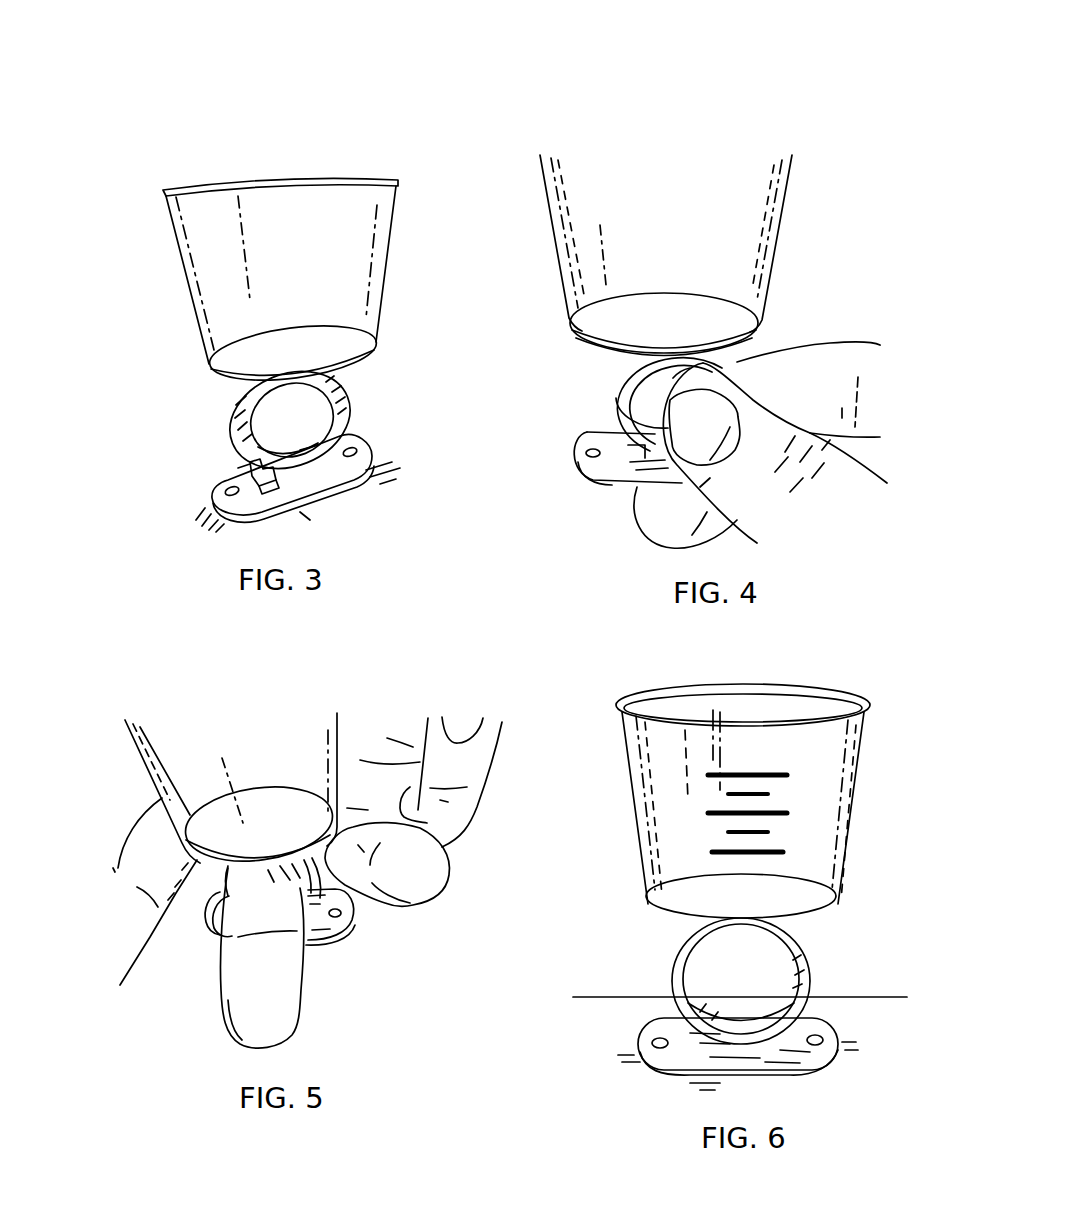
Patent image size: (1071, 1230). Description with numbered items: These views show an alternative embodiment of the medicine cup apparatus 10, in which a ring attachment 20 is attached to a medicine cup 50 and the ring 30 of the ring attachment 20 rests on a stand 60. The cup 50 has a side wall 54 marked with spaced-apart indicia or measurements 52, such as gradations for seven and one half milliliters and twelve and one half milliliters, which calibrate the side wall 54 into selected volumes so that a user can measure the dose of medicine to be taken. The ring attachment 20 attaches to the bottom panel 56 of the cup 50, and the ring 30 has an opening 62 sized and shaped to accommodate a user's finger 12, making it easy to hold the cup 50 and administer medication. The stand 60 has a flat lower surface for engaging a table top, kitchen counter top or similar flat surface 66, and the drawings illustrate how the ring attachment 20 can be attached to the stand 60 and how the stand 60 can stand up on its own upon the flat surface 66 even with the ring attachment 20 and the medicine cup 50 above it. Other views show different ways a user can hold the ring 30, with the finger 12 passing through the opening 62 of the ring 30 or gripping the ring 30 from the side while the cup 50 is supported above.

In FIG. 3, the medicine cup apparatus 10 is at (212, 137).
In FIG. 6, the medicine cup apparatus 10 is at (594, 950).
In FIG. 4, the finger 12 is at (820, 378).
In FIG. 5, the finger 12 is at (262, 1013).
In FIG. 3, the ring attachment 20 is at (163, 414).
In FIG. 3, the ring 30 is at (287, 430).
In FIG. 4, the ring 30 is at (603, 392).
In FIG. 5, the ring 30 is at (273, 878).
In FIG. 6, the ring 30 is at (741, 981).
In FIG. 3, the cup 50 is at (205, 248).
In FIG. 4, the cup 50 is at (583, 244).
In FIG. 5, the cup 50 is at (172, 763).
In FIG. 6, the cup 50 is at (650, 787).
In FIG. 6, the indicia or measurements 52 is at (785, 813).
In FIG. 3, the side wall 54 is at (342, 285).
In FIG. 3, the bottom panel 56 is at (340, 366).
In FIG. 4, the bottom panel 56 is at (580, 335).
In FIG. 5, the bottom panel 56 is at (292, 838).
In FIG. 3, the stand 60 is at (313, 483).
In FIG. 4, the stand 60 is at (603, 467).
In FIG. 5, the stand 60 is at (280, 917).
In FIG. 6, the stand 60 is at (680, 1053).
In FIG. 3, the opening 62 is at (298, 420).
In FIG. 6, the opening 62 is at (739, 968).
In FIG. 6, the flat surface 66 is at (630, 1034).